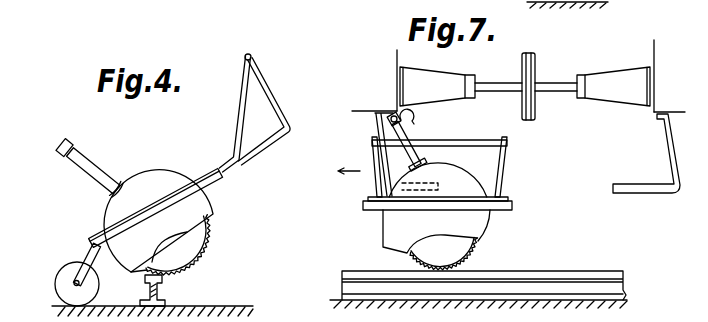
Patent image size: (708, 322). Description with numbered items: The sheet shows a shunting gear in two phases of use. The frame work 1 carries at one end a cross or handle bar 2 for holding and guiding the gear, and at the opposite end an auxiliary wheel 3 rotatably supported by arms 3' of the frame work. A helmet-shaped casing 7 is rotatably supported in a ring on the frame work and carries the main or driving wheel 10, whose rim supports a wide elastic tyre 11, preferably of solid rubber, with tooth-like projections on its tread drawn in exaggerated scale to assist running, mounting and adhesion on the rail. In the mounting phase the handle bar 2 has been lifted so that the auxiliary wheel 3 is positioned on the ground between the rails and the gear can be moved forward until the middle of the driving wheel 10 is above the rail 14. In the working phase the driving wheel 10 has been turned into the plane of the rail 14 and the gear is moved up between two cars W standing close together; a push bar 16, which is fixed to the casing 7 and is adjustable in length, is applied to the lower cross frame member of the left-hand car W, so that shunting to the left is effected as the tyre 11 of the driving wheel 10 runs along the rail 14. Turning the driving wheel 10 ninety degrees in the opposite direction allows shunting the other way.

In FIG. 4, the frame work 1 is at (216, 168).
In FIG. 7, the frame work 1 is at (508, 200).
In FIG. 4, the cross or handle bar 2 is at (251, 58).
In FIG. 7, the cross or handle bar 2 is at (482, 143).
In FIG. 4, the auxiliary wheel 3 is at (77, 273).
In FIG. 4, the arms 3' is at (94, 264).
In FIG. 4, the helmet-shaped casing 7 is at (156, 178).
In FIG. 7, the helmet-shaped casing 7 is at (463, 182).
In FIG. 4, the main or driving wheel 10 is at (198, 238).
In FIG. 7, the main or driving wheel 10 is at (481, 240).
In FIG. 4, the elastic tyre 11 is at (199, 258).
In FIG. 7, the elastic tyre 11 is at (468, 255).
In FIG. 4, the rail 14 is at (158, 287).
In FIG. 7, the rail 14 is at (540, 277).
In FIG. 4, the push bar 16 is at (95, 165).
In FIG. 7, the push bar 16 is at (408, 132).
In FIG. 7, the cars W is at (521, 80).